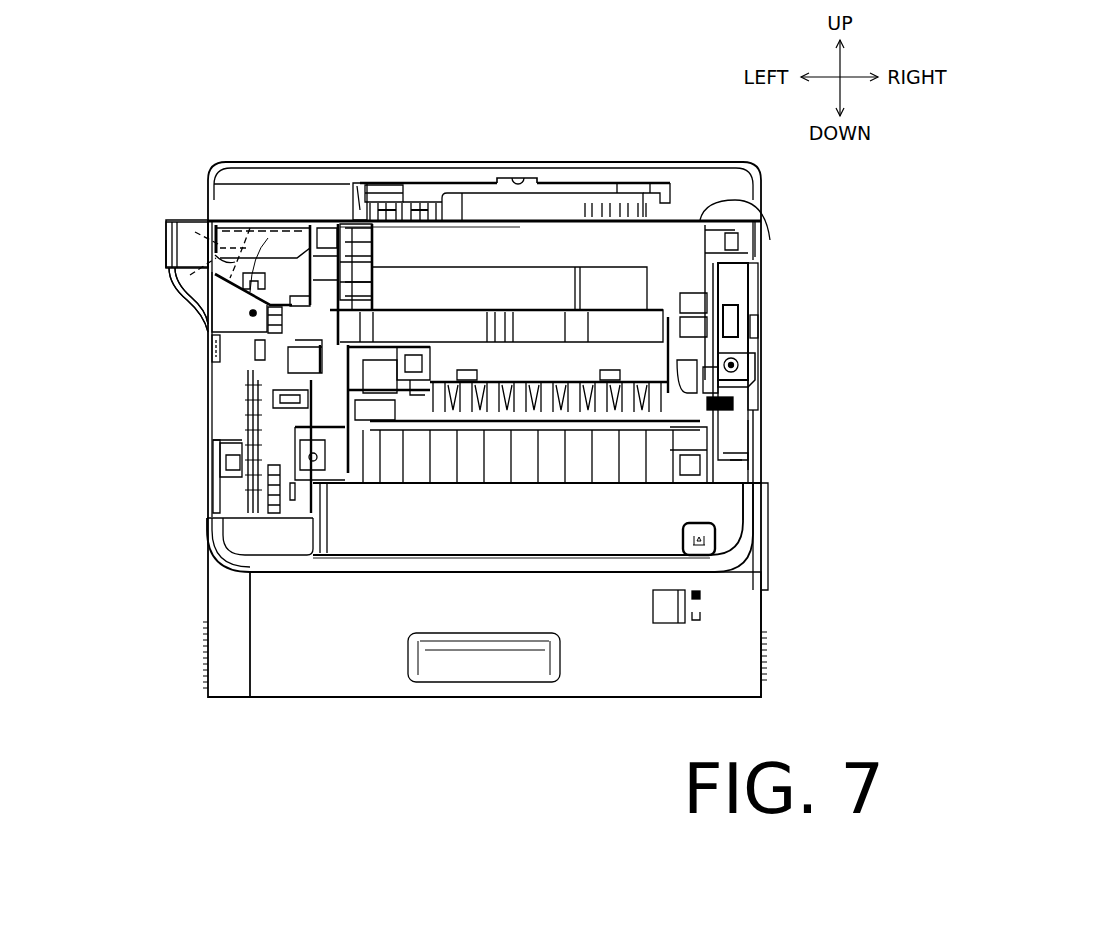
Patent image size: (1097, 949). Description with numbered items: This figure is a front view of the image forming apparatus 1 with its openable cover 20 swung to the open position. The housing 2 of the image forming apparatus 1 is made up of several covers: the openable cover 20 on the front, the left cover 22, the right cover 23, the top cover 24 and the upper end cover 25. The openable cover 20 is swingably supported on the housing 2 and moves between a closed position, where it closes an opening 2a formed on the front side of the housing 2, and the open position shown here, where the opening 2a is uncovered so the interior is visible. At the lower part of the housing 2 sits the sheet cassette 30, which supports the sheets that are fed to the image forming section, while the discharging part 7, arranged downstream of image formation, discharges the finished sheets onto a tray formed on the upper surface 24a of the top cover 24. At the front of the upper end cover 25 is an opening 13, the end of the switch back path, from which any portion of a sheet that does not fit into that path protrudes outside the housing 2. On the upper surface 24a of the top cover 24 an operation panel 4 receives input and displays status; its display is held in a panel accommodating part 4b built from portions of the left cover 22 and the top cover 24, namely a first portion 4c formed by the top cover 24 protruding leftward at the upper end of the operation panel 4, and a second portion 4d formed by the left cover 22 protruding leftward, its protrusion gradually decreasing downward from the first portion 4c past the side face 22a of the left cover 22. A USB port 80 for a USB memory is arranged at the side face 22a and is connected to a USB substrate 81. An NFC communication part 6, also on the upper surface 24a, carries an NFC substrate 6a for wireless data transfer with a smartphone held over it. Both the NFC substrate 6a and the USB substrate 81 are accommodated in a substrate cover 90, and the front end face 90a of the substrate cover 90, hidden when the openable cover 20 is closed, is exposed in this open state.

The image forming apparatus 1 is at (278, 82).
The housing 2 is at (580, 155).
The opening 2a is at (687, 358).
The operation panel 4 is at (195, 212).
The panel accommodating part 4b is at (88, 263).
The first portion 4c is at (167, 252).
The second portion 4d is at (187, 273).
The NFC communication part 6 is at (288, 214).
The NFC substrate 6a is at (267, 222).
The discharging part 7 is at (362, 211).
The opening 13 is at (514, 180).
The openable cover 20 is at (730, 510).
The left cover 22 is at (200, 414).
The side face 22a is at (213, 348).
The right cover 23 is at (766, 417).
The top cover 24 is at (164, 240).
The upper surface 24a is at (758, 224).
The upper end cover 25 is at (463, 156).
The sheet cassette 30 is at (745, 614).
The USB port 80 is at (200, 236).
The USB substrate 81 is at (214, 280).
The substrate cover 90 is at (278, 270).
The end face 90a is at (252, 315).